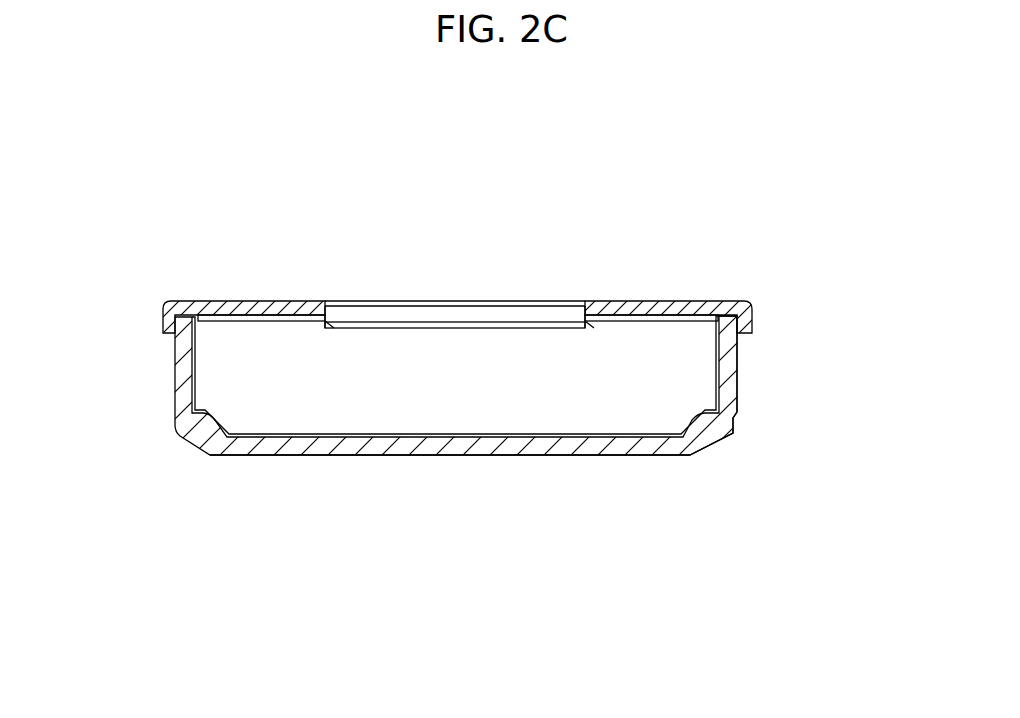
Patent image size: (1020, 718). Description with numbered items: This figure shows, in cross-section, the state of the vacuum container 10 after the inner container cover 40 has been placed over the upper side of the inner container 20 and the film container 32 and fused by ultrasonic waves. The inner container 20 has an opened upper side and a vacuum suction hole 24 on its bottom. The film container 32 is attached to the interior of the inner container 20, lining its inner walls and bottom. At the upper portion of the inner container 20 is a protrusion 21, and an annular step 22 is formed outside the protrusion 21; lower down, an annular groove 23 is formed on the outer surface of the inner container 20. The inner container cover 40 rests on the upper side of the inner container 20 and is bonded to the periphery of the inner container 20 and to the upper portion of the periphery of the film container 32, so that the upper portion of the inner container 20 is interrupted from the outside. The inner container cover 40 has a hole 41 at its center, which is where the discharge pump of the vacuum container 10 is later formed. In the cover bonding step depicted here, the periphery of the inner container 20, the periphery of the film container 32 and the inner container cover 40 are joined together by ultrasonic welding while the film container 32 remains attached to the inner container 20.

The vacuum container 10 is at (550, 245).
The inner container 20 is at (833, 225).
The protrusion 21 is at (748, 333).
The annular step 22 is at (743, 300).
The annular groove 23 is at (738, 404).
The vacuum suction hole 24 is at (665, 455).
The film container 32 is at (195, 375).
The inner container cover 40 is at (240, 310).
The hole 41 is at (470, 317).